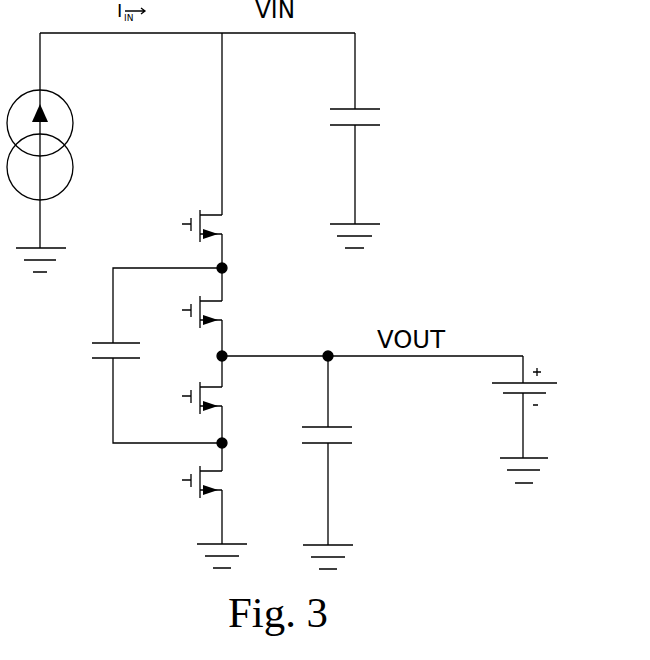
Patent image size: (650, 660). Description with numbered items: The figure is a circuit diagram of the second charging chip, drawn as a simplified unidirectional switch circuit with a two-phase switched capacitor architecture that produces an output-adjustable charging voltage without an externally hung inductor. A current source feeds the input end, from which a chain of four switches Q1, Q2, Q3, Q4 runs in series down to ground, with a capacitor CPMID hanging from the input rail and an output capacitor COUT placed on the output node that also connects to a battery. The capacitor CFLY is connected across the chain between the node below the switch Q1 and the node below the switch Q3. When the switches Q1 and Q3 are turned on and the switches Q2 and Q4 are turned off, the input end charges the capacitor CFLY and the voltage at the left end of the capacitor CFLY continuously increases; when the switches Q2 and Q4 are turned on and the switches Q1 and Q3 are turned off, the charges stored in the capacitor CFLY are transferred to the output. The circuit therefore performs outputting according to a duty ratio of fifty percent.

The switch Q1 is at (219, 227).
The switch Q2 is at (219, 312).
The switch Q3 is at (219, 399).
The switch Q4 is at (219, 484).
The capacitor CFLY is at (118, 355).
The mid-point capacitor CPMID is at (400, 135).
The output capacitor COUT is at (373, 462).